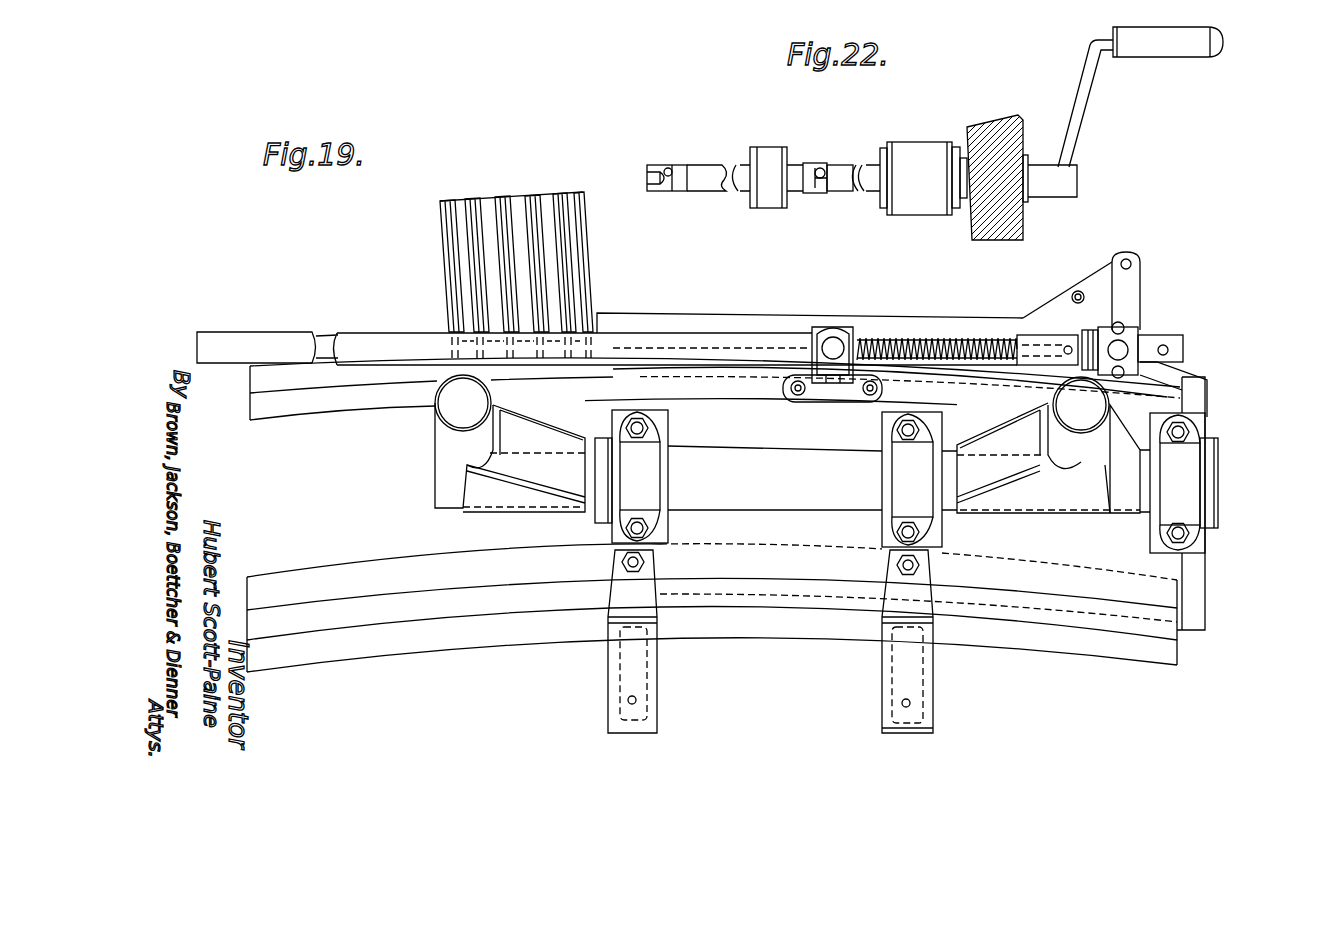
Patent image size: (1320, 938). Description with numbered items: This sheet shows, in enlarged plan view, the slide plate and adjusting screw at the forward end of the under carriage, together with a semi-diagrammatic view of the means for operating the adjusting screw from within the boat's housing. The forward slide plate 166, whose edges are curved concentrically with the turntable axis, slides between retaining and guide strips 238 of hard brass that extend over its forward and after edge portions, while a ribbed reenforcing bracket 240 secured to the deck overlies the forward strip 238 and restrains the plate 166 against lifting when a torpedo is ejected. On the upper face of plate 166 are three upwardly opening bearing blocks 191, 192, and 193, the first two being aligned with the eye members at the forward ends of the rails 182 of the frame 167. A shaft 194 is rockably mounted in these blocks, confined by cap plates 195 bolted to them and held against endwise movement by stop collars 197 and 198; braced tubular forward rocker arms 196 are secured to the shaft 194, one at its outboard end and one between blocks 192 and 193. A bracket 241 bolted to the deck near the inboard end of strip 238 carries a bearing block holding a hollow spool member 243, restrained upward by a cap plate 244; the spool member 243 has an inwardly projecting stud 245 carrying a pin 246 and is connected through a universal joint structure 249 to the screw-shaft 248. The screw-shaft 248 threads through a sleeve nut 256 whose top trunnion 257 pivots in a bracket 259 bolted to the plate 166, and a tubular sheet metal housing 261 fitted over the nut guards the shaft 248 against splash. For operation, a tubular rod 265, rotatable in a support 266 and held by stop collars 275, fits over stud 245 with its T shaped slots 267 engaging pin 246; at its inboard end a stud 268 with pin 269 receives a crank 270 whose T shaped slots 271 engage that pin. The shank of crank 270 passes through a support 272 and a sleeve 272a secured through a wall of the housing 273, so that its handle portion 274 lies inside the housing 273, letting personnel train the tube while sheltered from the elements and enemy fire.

In FIG. 19, the slide plate 166 is at (1188, 571).
In FIG. 19, the frame 167 is at (943, 728).
In FIG. 19, the rails 182 is at (657, 727).
In FIG. 19, the bearing block 191 is at (670, 420).
In FIG. 19, the bearing block 192 is at (882, 420).
In FIG. 19, the bearing block 193 is at (1202, 418).
In FIG. 19, the shaft 194 is at (778, 497).
In FIG. 19, the cap plates 195 is at (650, 453).
In FIG. 19, the forward rocker arms 196 is at (443, 446).
In FIG. 19, the stop collar 197 is at (1218, 448).
In FIG. 19, the stop collar 198 is at (593, 516).
In FIG. 19, the retaining and guide strips 238 is at (652, 320).
In FIG. 19, the reenforcing bracket 240 is at (540, 203).
In FIG. 19, the bracket 241 is at (1100, 283).
In FIG. 19, the hollow spool member 243 is at (1198, 377).
In FIG. 19, the cap plate 244 is at (1132, 337).
In FIG. 19, the stud 245 is at (1185, 353).
In FIG. 22, the stud 245 is at (648, 172).
In FIG. 19, the pin 246 is at (1167, 344).
In FIG. 22, the pin 246 is at (670, 168).
In FIG. 19, the screw-shaft 248 is at (968, 338).
In FIG. 19, the universal joint structure 249 is at (1046, 327).
In FIG. 19, the sleeve nut 256 is at (815, 335).
In FIG. 19, the top trunnion 257 is at (833, 337).
In FIG. 19, the bracket 259 is at (852, 333).
In FIG. 19, the tubular sheet metal housing 261 is at (605, 322).
In FIG. 22, the tubular rod 265 is at (708, 167).
In FIG. 22, the support 266 is at (768, 200).
In FIG. 22, the T shaped slots 267 is at (650, 192).
In FIG. 22, the stud 268 is at (810, 193).
In FIG. 22, the pin 269 is at (822, 168).
In FIG. 22, the crank 270 is at (872, 165).
In FIG. 22, the T shaped slots 271 is at (822, 183).
In FIG. 22, the support 272 is at (905, 205).
In FIG. 22, the sleeve 272a is at (1027, 160).
In FIG. 22, the housing 273 is at (980, 125).
In FIG. 22, the handle portion 274 is at (1080, 117).
In FIG. 22, the stop collars 275 is at (786, 148).